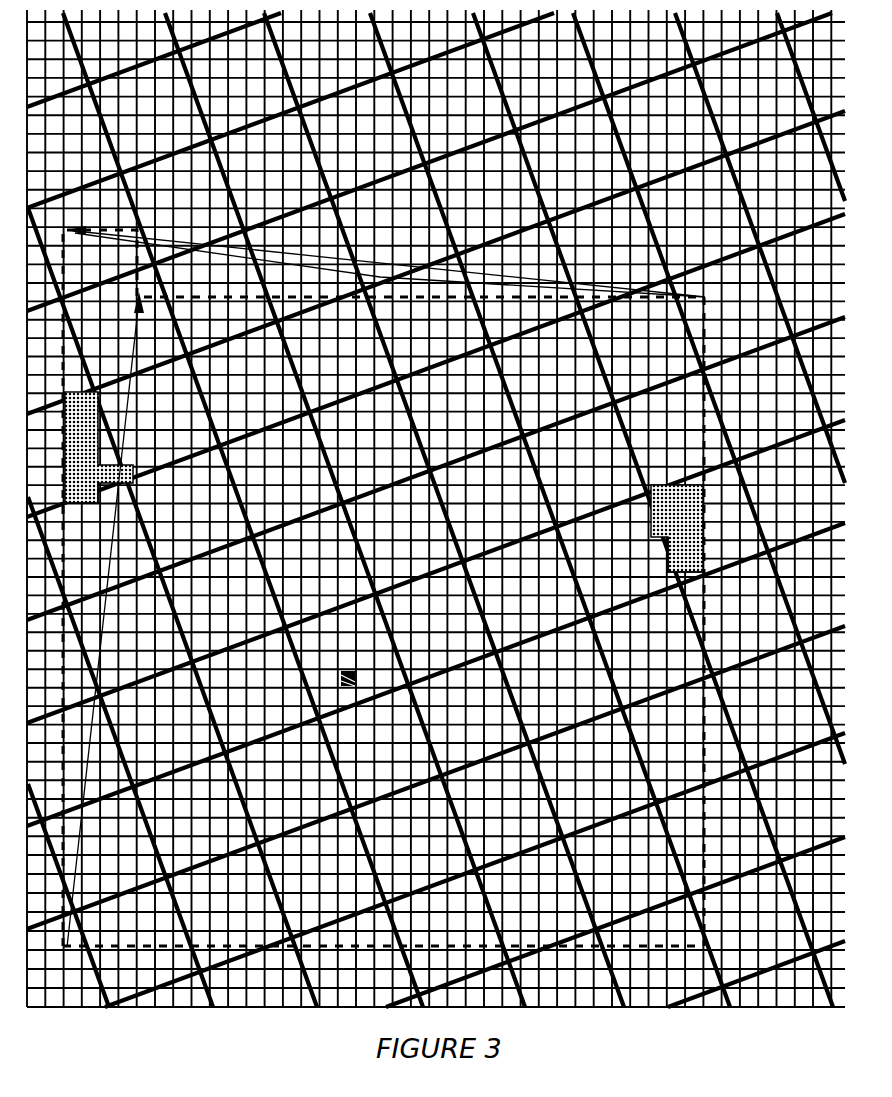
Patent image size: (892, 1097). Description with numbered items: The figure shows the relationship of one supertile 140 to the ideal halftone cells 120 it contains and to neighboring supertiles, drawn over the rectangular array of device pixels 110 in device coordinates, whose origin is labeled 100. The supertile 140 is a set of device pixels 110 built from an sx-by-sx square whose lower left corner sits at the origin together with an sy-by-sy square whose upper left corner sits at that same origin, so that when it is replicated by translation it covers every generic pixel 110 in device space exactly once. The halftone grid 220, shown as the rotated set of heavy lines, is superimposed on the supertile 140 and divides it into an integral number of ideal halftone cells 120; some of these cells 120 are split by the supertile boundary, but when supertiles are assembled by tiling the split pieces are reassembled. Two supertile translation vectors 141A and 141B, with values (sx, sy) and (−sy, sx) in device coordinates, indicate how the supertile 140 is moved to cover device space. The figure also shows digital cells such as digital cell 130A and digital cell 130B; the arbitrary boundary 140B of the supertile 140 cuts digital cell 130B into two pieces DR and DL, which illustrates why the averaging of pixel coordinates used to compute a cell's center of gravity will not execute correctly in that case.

The gate array region 100 is at (63, 302).
The device pixel 110 is at (351, 671).
The ideal halftone cell 120 is at (372, 582).
The digital cell 130A is at (100, 503).
The digital cell 130B is at (668, 573).
The supertile 140 is at (704, 862).
The arbitrary boundary of supertile 140B is at (704, 593).
The supertile translation vector 141A is at (100, 632).
The supertile translation vector 141B is at (383, 262).
The halftone grid 220 is at (428, 180).
The piece of digital cell DR is at (90, 447).
The piece of digital cell DL is at (674, 513).